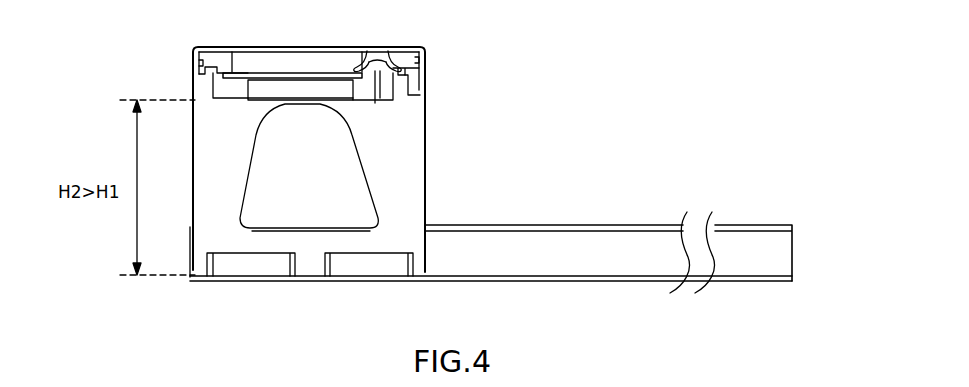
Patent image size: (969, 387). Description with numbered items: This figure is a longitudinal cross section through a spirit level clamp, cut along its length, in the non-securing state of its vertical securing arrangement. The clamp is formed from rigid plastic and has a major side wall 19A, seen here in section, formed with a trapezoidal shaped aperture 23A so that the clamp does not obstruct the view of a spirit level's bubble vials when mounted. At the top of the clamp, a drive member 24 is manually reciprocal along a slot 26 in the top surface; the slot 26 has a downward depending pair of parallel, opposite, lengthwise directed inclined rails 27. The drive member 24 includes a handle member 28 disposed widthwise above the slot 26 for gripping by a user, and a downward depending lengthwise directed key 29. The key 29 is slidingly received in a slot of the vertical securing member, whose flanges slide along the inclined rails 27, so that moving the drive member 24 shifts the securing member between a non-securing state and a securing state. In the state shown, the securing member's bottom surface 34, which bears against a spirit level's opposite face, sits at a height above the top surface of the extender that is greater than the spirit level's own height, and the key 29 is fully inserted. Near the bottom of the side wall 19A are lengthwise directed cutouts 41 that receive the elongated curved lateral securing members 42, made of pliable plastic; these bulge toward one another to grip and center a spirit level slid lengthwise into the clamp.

The major side wall 19A is at (400, 170).
The trapezoidal shaped aperture 23A is at (328, 185).
The drive member 24 is at (395, 72).
The slot 26 is at (272, 77).
The inclined rails 27 is at (403, 73).
The handle member 28 is at (372, 50).
The key 29 is at (377, 104).
The bottom surface 34 is at (248, 97).
The cutouts 41 is at (382, 252).
The lateral securing members 42 is at (380, 268).